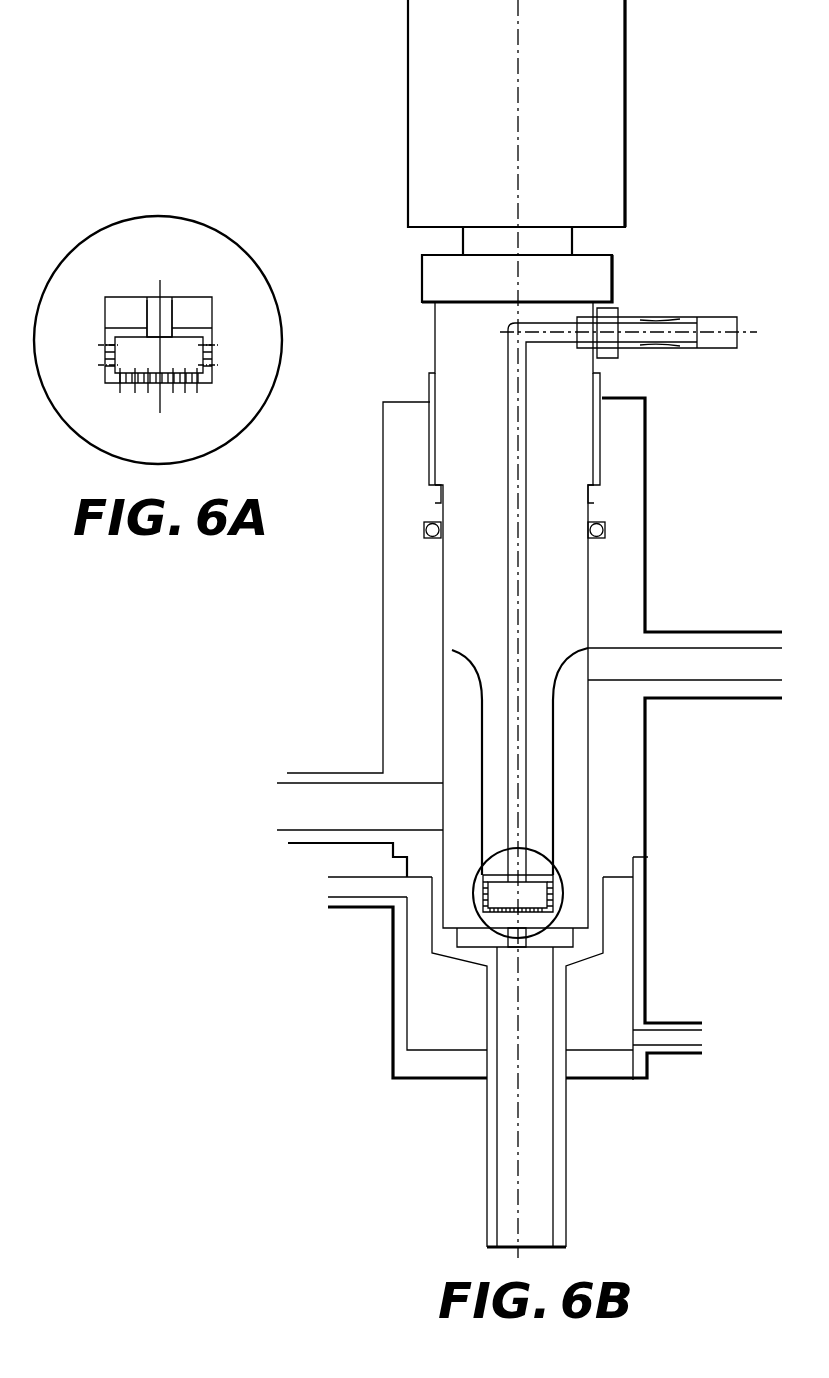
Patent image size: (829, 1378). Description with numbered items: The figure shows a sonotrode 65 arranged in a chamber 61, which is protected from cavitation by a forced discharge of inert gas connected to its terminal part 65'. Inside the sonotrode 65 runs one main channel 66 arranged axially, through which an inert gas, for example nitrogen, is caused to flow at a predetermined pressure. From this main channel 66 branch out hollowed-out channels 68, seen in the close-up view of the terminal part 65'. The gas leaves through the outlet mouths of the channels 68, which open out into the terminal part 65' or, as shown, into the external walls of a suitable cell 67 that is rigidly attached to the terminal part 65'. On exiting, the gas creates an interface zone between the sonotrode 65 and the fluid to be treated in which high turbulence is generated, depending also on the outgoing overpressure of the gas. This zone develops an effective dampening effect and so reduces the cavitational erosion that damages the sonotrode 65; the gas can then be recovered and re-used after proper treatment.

In FIG. 6B, the chamber 61 is at (563, 818).
In FIG. 6B, the sonotrode 65 is at (564, 624).
In FIG. 6A, the terminal part 65' is at (157, 309).
In FIG. 6B, the terminal part 65' is at (447, 853).
In FIG. 6A, the main channel 66 is at (160, 318).
In FIG. 6B, the main channel 66 is at (517, 462).
In FIG. 6A, the cell 67 is at (170, 352).
In FIG. 6B, the cell 67 is at (537, 897).
In FIG. 6A, the hollowed-out channels 68 is at (140, 387).